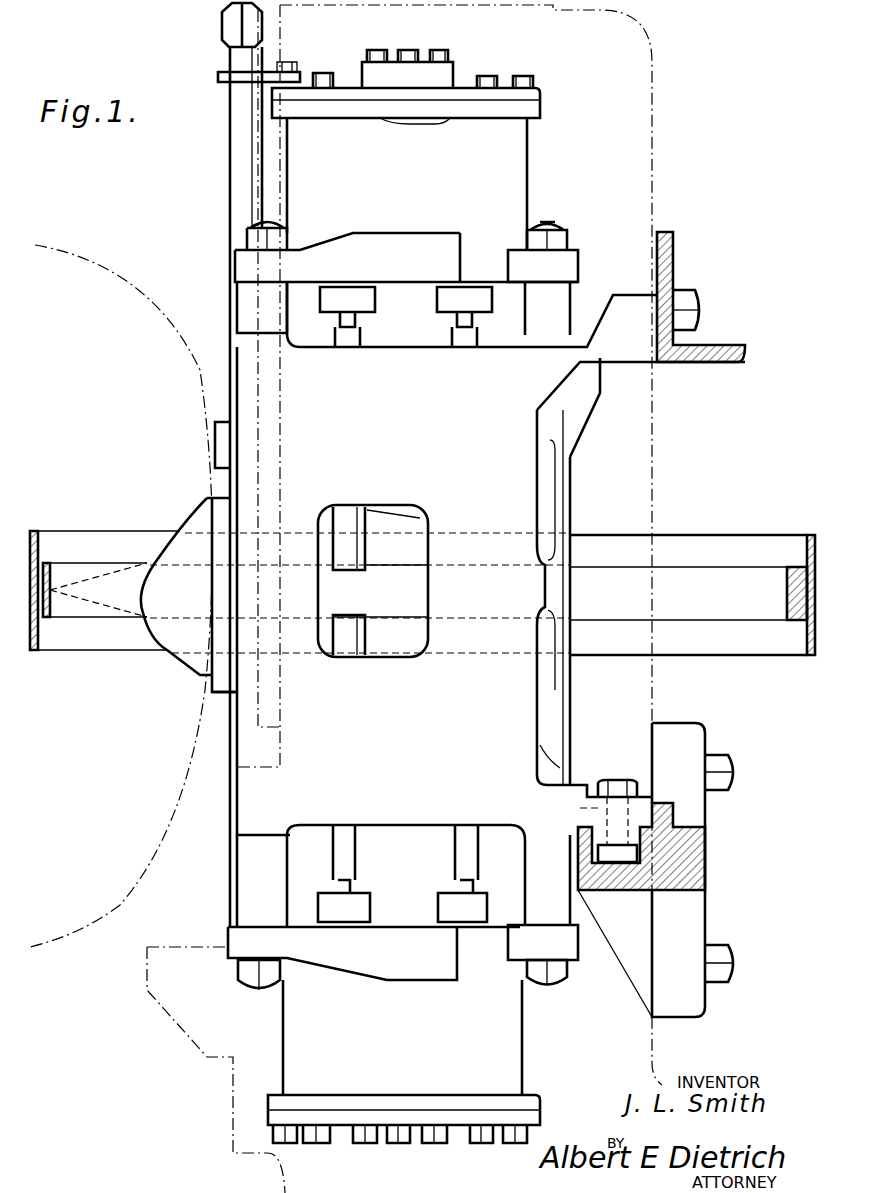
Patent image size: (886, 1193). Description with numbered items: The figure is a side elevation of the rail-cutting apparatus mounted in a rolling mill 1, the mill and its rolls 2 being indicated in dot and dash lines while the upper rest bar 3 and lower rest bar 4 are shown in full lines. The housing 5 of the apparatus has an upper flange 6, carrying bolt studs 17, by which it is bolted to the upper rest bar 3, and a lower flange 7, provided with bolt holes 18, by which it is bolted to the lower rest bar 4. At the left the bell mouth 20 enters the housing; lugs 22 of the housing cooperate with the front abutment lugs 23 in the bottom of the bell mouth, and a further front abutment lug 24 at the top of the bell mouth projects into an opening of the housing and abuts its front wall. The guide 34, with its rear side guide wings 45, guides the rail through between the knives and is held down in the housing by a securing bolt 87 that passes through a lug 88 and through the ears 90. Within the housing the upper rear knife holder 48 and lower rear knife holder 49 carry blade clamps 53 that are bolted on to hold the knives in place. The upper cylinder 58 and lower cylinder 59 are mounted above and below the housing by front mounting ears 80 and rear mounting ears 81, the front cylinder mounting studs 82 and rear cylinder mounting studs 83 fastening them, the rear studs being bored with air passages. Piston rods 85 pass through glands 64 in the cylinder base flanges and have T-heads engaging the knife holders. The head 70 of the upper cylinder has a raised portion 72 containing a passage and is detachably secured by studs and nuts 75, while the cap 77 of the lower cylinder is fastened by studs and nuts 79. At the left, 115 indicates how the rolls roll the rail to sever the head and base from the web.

The rolling mill 1 is at (657, 516).
The rolls 2 is at (172, 283).
The upper rest bar 3 is at (723, 345).
The lower rest bar 4 is at (706, 865).
The housing 5 is at (313, 577).
The upper flange 6 is at (472, 603).
The lower flange 7 is at (618, 780).
The bolt studs 17 is at (699, 316).
The bolt holes 18 is at (598, 808).
The bell mouth 20 is at (572, 512).
The lugs 22 is at (594, 775).
The front abutment lugs 23 is at (565, 752).
The front abutment lug 24 is at (600, 362).
The guide 34 is at (200, 688).
The rear side guide wings 45 is at (123, 586).
The upper rear knife holder 48 is at (385, 581).
The lower rear knife holder 49 is at (352, 612).
The blade clamps 53 is at (367, 548).
The upper cylinder 58 is at (406, 185).
The lower cylinder 59 is at (404, 1052).
The glands 64 is at (437, 300).
The head of the upper cylinder 70 is at (470, 76).
The raised portion 72 is at (407, 76).
The studs and nuts 75 is at (367, 54).
The cap for the lower cylinder 77 is at (345, 1148).
The studs and nuts 79 is at (450, 1148).
The front mounting ears 80 is at (580, 265).
The rear mounting ears 81 is at (235, 270).
The front cylinder mounting studs 82 is at (572, 300).
The rear cylinder mounting studs 83 is at (240, 296).
The piston rods 85 is at (437, 328).
The securing bolt 87 is at (230, 125).
The lug 88 is at (218, 73).
The ears 90 is at (213, 440).
The rolling of the rail 115 is at (42, 600).